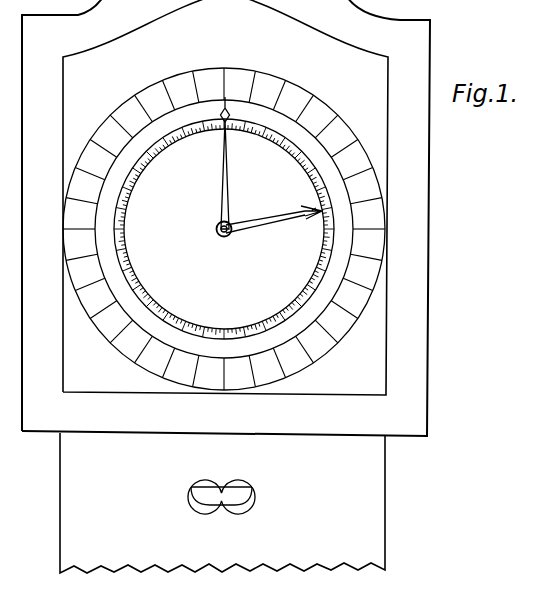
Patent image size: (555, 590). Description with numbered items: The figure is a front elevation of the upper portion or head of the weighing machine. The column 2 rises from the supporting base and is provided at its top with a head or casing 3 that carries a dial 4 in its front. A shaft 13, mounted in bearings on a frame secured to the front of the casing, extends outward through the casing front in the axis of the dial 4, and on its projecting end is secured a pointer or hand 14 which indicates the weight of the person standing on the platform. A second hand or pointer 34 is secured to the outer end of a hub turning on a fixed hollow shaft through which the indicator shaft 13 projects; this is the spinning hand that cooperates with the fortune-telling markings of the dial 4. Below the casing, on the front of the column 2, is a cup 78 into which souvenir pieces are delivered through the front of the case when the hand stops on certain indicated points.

The column 2 is at (238, 503).
The head or casing 3 is at (427, 221).
The dial 4 is at (370, 164).
The shaft 13 is at (216, 232).
The pointer or hand 14 is at (274, 222).
The hand or pointer 34 is at (216, 188).
The cup 78 is at (256, 494).